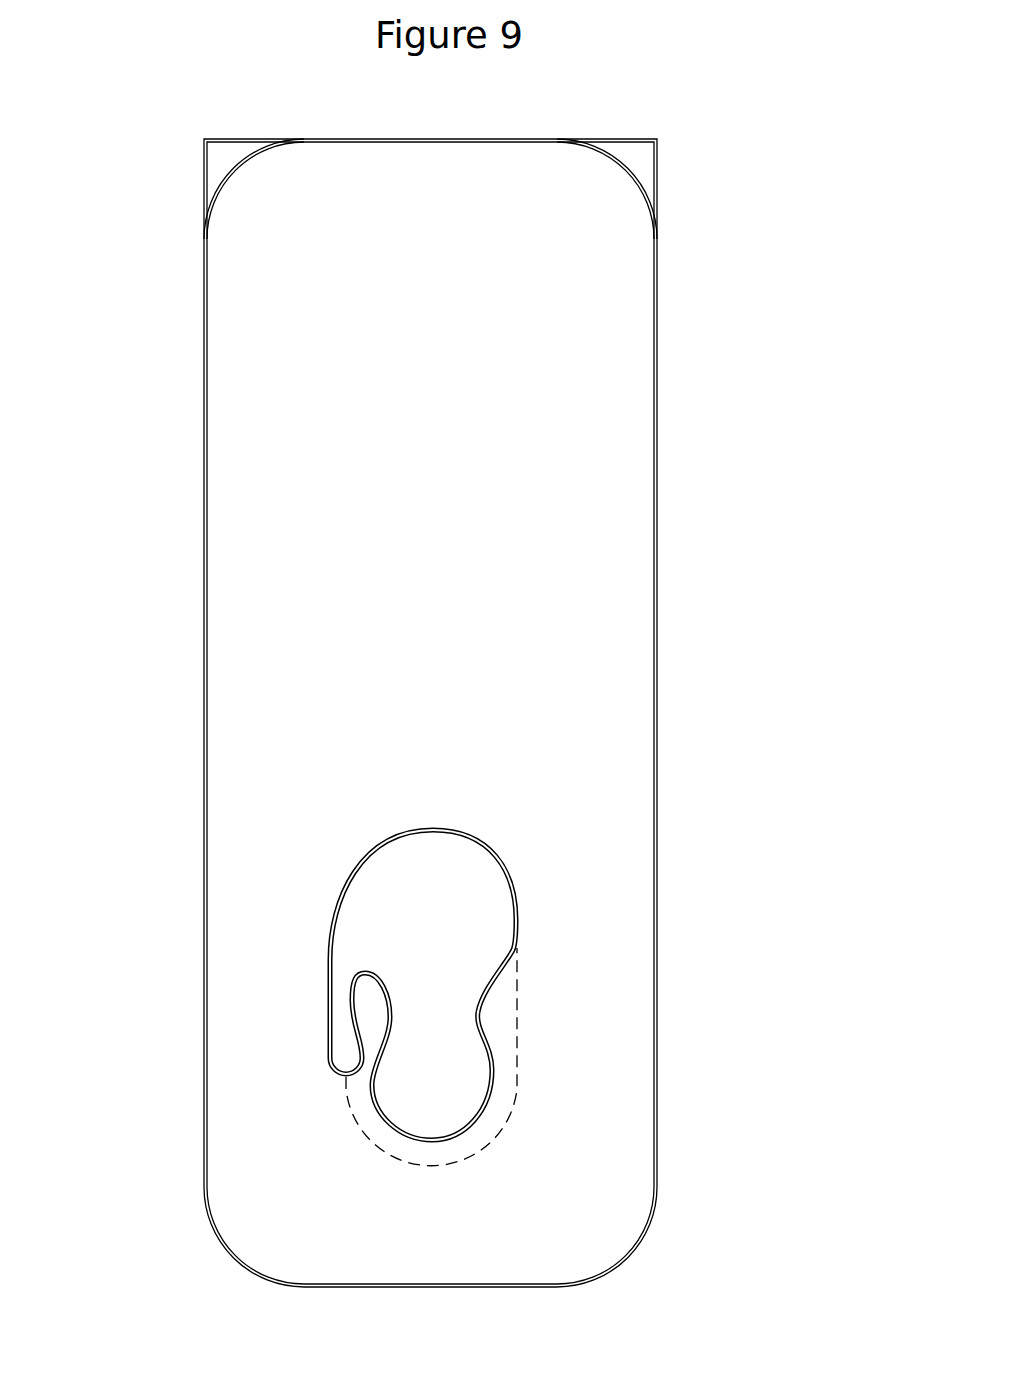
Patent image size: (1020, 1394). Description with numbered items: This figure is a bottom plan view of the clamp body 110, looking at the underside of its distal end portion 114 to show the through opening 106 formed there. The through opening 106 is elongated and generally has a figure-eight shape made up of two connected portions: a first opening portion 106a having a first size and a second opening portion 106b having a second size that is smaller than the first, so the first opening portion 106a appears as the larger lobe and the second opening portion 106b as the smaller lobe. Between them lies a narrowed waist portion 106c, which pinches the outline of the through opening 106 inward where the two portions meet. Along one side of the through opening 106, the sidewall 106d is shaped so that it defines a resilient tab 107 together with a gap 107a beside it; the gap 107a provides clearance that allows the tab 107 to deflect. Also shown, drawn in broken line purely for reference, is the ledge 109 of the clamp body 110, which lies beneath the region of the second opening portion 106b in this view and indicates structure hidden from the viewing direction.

The clamp body 110 is at (658, 257).
The distal end portion 114 is at (597, 1047).
The ledge 109 is at (483, 1140).
The through opening 106 is at (422, 960).
The first opening portion 106a is at (443, 903).
The second opening portion 106b is at (436, 1085).
The narrowed waist portion 106c is at (437, 1013).
The sidewall 106d is at (400, 1004).
The resilient tab 107 is at (373, 1017).
The gap 107a is at (343, 1035).